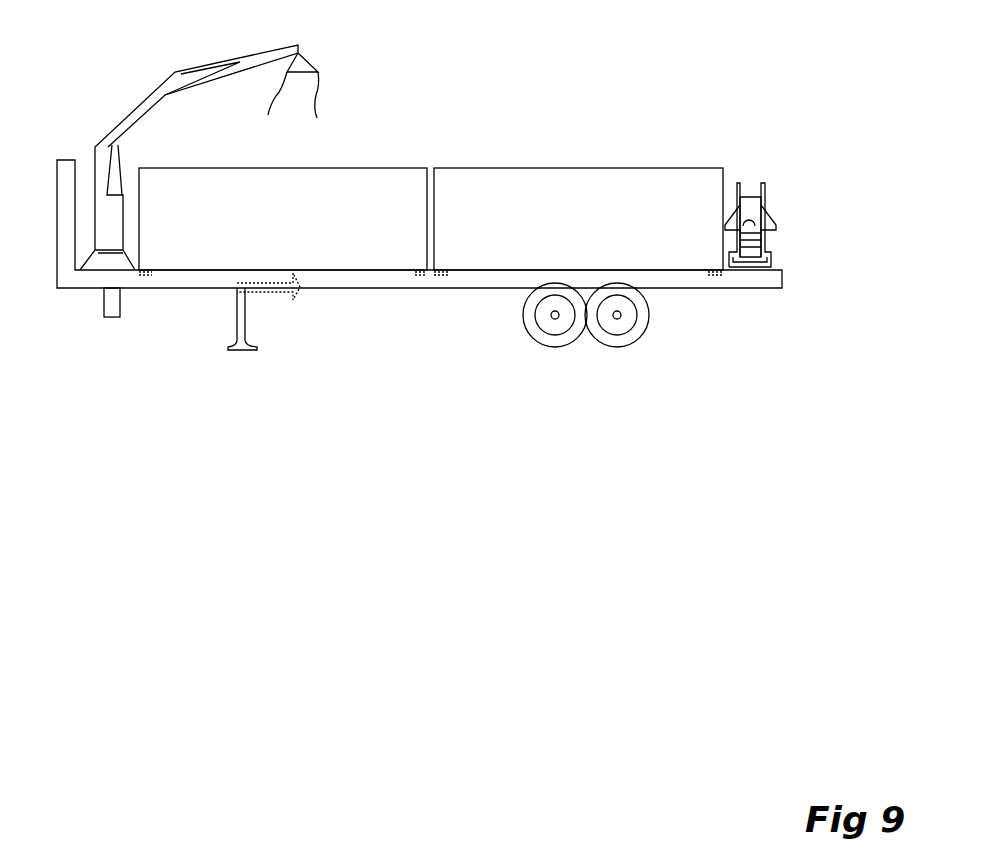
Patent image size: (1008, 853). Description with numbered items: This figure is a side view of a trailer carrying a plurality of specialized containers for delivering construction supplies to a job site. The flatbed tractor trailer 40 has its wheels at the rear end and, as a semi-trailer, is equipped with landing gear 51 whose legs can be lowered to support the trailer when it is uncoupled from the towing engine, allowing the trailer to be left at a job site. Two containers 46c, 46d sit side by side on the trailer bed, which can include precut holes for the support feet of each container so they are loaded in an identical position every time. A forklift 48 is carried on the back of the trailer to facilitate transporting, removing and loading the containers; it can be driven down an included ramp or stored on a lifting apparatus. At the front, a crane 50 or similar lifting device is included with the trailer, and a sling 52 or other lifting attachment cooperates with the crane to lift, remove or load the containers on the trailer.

The flatbed tractor trailer 40 is at (73, 276).
The container 46c is at (236, 192).
The container 46d is at (507, 183).
The forklift 48 is at (762, 198).
The crane 50 is at (175, 72).
The landing gear 51 is at (245, 323).
The sling 52 is at (320, 72).